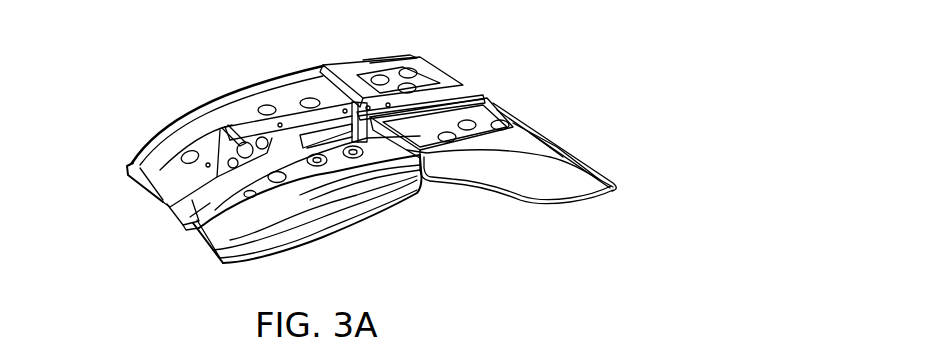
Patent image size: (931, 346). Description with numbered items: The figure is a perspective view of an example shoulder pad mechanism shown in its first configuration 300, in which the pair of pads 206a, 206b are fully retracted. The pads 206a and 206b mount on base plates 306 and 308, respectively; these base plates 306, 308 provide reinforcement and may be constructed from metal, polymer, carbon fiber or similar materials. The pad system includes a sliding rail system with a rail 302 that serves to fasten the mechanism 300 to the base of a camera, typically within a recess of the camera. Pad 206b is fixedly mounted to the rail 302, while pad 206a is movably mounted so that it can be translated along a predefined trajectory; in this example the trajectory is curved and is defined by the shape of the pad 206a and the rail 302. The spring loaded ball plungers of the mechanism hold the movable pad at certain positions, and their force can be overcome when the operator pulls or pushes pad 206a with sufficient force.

The first configuration 300 is at (112, 62).
The rail 302 is at (293, 122).
The base plate 306 is at (172, 170).
The base plate 308 is at (500, 120).
The pad 206a is at (278, 242).
The pad 206b is at (570, 203).